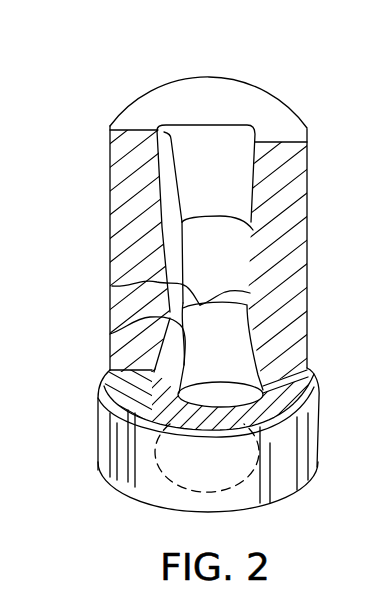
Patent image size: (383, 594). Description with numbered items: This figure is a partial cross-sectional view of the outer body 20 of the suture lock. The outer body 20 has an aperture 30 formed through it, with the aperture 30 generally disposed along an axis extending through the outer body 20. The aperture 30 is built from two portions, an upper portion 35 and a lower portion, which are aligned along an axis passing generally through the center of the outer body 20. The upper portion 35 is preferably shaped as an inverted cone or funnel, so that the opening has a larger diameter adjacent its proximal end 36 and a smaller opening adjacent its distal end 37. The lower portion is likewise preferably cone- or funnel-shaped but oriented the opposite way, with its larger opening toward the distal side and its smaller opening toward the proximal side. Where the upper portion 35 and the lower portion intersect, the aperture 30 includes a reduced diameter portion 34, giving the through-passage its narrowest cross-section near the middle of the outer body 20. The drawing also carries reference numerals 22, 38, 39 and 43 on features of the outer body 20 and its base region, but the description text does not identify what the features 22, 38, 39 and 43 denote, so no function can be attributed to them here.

The outer body 20 is at (94, 92).
The housing body 22 is at (284, 120).
The aperture 30 is at (214, 112).
The reduced diameter portion 34 is at (250, 293).
The upper portion 35 is at (253, 230).
The proximal end 36 is at (172, 124).
The distal end 37 is at (110, 334).
The base flange 38 is at (313, 412).
The upper curved surface 39 is at (112, 286).
The bottom bore 43 is at (177, 489).